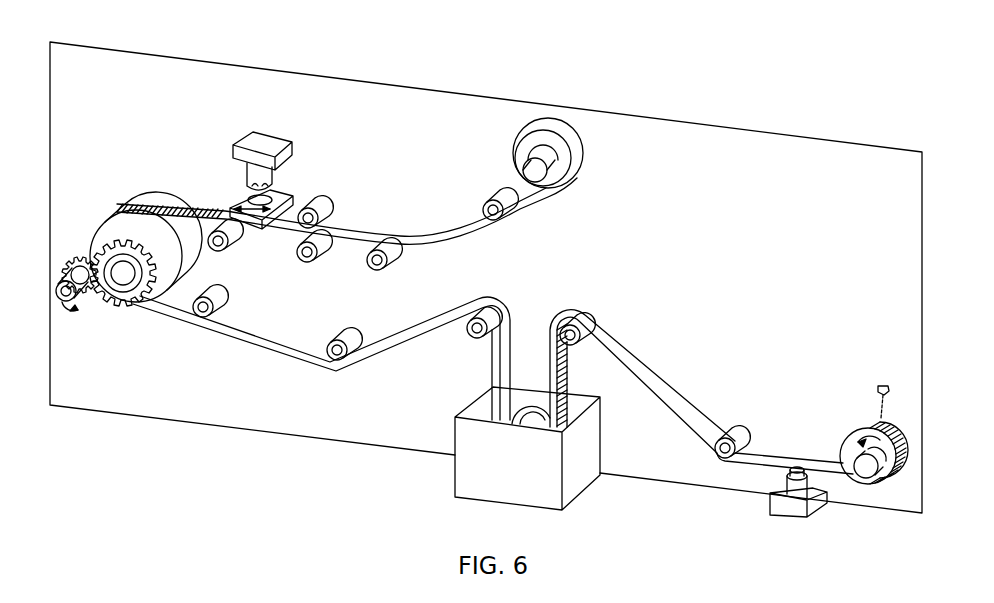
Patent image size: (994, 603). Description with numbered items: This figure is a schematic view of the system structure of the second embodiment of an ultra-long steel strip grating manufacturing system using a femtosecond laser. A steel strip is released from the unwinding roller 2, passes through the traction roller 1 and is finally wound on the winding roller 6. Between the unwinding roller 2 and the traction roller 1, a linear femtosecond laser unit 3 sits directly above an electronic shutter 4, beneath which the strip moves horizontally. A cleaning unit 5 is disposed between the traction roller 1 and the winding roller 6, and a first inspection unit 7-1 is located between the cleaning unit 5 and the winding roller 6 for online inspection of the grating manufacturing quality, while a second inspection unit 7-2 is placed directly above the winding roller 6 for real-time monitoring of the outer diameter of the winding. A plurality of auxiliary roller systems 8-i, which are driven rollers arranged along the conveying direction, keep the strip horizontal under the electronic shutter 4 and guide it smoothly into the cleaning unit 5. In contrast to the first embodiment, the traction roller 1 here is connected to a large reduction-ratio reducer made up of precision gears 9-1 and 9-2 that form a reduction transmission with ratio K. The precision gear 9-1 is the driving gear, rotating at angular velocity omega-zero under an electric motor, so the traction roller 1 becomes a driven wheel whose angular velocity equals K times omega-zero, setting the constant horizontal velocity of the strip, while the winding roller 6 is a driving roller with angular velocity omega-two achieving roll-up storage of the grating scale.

The traction roller 1 is at (128, 230).
The unwinding roller 2 is at (580, 163).
The linear femtosecond laser unit 3 is at (263, 165).
The electronic shutter 4 is at (245, 193).
The cleaning unit 5 is at (455, 477).
The winding roller 6 is at (853, 433).
The first inspection unit 7-1 is at (777, 503).
The second inspection unit 7-2 is at (877, 392).
The auxiliary roller systems 8-i is at (393, 262).
The precision gear 9-1 is at (95, 300).
The precision gear 9-2 is at (142, 297).